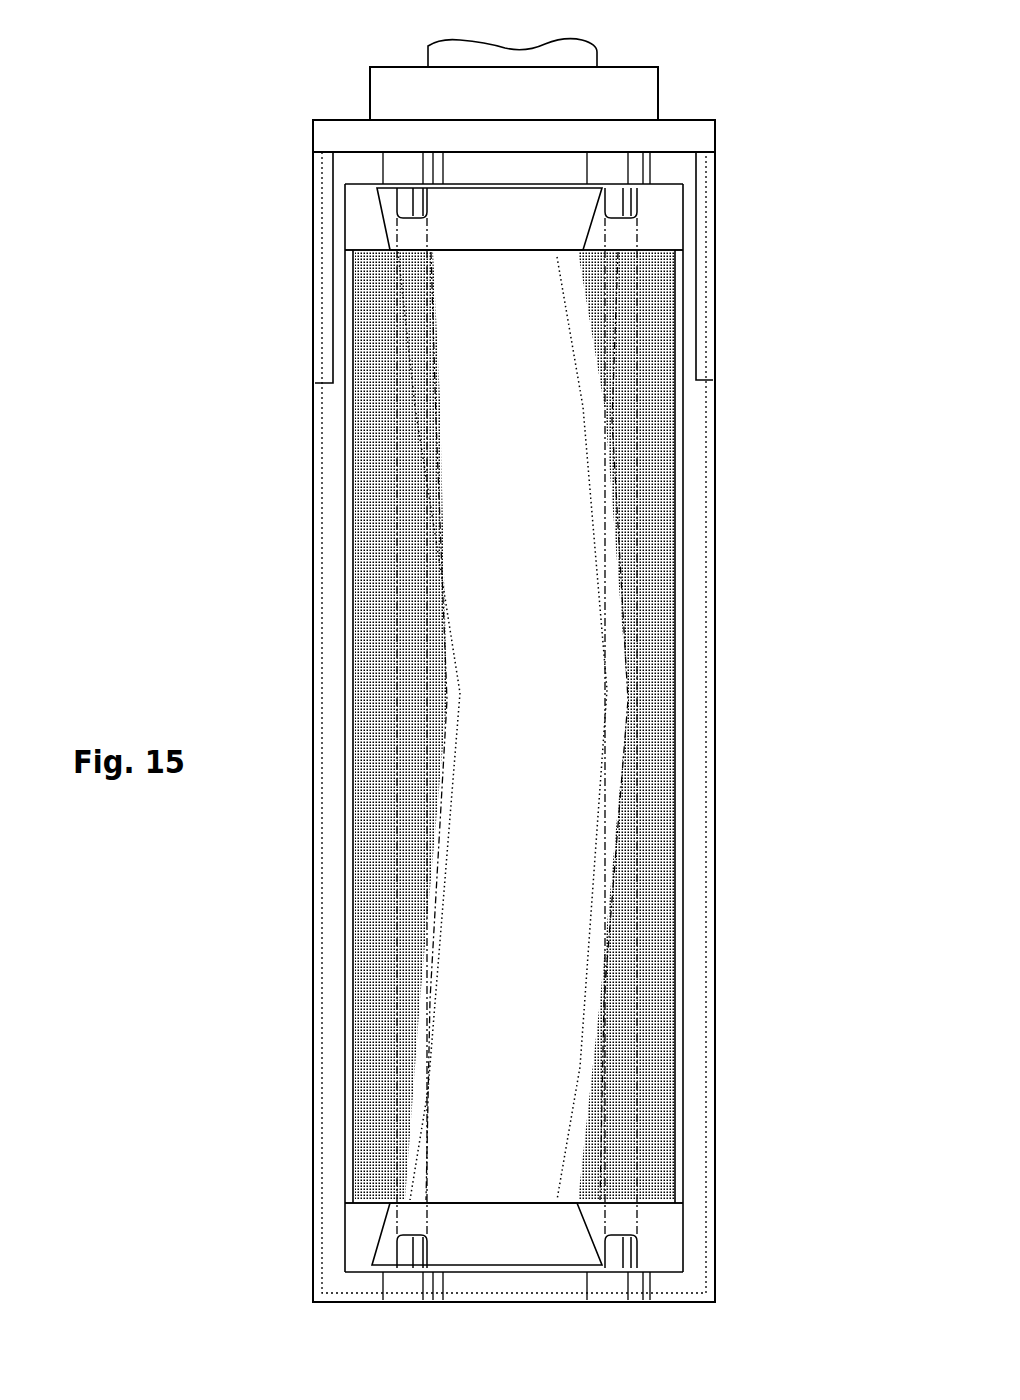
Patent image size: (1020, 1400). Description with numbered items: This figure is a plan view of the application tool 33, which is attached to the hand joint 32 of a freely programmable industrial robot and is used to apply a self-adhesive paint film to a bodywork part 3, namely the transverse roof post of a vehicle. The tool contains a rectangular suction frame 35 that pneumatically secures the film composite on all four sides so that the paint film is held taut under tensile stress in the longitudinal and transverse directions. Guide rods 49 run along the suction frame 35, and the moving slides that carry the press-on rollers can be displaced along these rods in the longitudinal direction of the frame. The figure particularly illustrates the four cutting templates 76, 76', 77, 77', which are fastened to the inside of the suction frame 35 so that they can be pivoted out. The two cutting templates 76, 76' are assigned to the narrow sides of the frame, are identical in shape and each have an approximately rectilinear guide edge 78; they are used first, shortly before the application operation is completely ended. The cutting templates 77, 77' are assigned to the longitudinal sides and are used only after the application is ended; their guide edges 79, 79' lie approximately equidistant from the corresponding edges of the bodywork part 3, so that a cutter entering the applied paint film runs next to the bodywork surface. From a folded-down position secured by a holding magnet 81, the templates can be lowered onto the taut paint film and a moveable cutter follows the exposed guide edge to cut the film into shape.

The bodywork part 3 is at (578, 1078).
The hand joint 32 is at (608, 97).
The application tool 33 is at (687, 119).
The suction frame 35 is at (697, 686).
The guide rods 49 is at (632, 200).
The cutting template 76 is at (487, 1234).
The cutting template 76' is at (489, 219).
The cutting template 77 is at (435, 726).
The cutting template 77' is at (596, 726).
The guide edge 78 is at (511, 253).
The guide edge 79 is at (475, 726).
The guide edge 79' is at (581, 726).
The holding magnet 81 is at (347, 466).